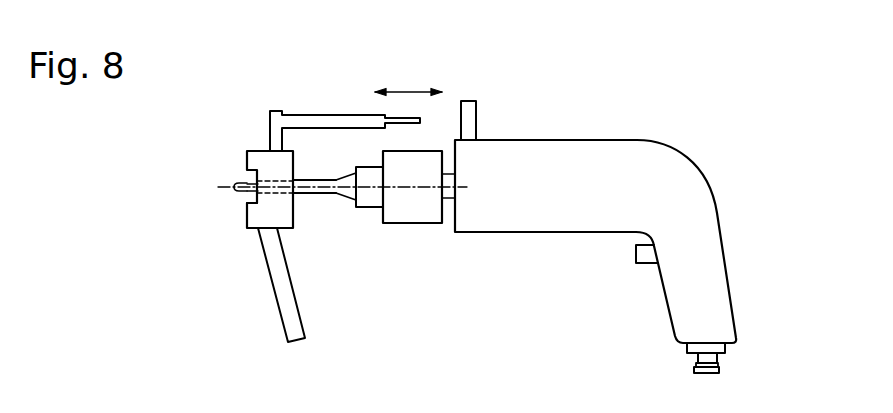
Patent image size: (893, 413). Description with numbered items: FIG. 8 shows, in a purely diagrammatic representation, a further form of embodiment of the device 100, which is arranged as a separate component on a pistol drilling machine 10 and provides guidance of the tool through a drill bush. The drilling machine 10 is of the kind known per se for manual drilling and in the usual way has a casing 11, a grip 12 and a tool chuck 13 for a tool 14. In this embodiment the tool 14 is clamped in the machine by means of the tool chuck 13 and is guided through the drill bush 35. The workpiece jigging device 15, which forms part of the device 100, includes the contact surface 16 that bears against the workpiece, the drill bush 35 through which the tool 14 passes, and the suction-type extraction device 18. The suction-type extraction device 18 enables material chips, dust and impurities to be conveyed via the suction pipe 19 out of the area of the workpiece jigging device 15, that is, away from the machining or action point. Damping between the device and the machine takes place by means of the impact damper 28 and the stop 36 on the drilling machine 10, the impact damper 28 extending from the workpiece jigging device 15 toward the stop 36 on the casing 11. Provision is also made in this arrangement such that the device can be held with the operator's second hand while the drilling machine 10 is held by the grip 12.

The device 100 is at (300, 87).
The drilling machine 10 is at (615, 132).
The casing 11 is at (543, 167).
The grip 12 is at (718, 303).
The tool chuck 13 is at (406, 230).
The tool 14 is at (315, 194).
The workpiece jigging device 15 is at (265, 158).
The contact surface 16 is at (247, 217).
The suction-type extraction device 18 is at (262, 268).
The suction pipe 19 is at (288, 307).
The impact damper 28 is at (328, 116).
The drill bush 35 is at (275, 180).
The stop 36 is at (467, 112).